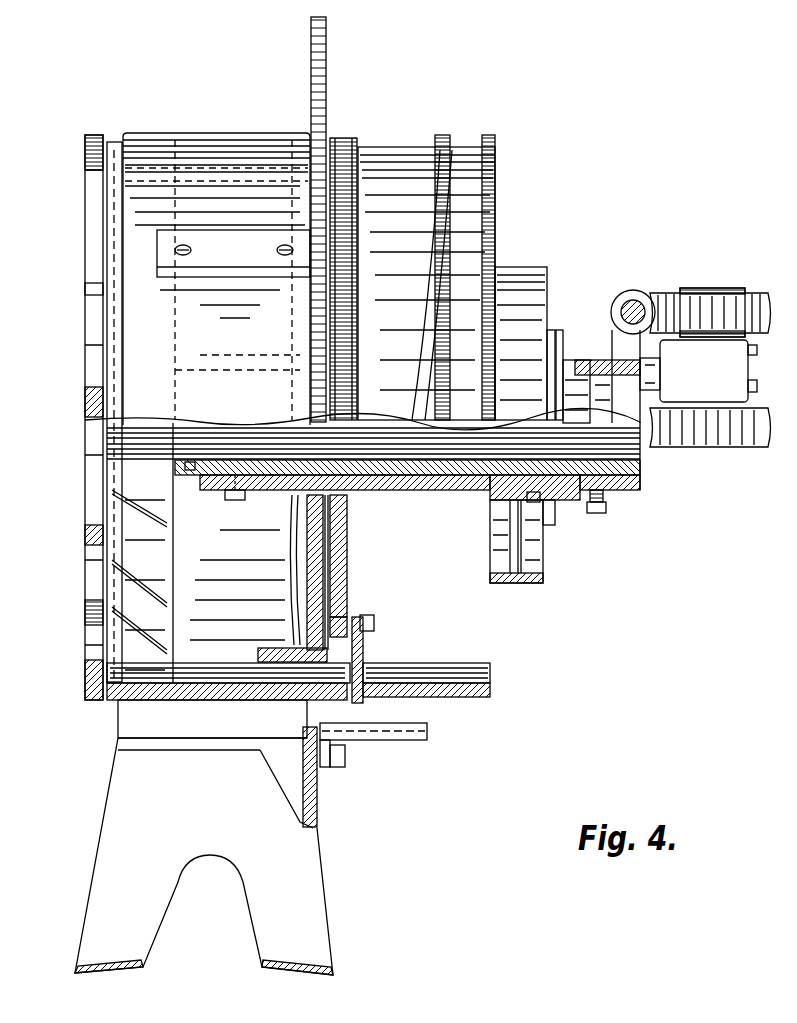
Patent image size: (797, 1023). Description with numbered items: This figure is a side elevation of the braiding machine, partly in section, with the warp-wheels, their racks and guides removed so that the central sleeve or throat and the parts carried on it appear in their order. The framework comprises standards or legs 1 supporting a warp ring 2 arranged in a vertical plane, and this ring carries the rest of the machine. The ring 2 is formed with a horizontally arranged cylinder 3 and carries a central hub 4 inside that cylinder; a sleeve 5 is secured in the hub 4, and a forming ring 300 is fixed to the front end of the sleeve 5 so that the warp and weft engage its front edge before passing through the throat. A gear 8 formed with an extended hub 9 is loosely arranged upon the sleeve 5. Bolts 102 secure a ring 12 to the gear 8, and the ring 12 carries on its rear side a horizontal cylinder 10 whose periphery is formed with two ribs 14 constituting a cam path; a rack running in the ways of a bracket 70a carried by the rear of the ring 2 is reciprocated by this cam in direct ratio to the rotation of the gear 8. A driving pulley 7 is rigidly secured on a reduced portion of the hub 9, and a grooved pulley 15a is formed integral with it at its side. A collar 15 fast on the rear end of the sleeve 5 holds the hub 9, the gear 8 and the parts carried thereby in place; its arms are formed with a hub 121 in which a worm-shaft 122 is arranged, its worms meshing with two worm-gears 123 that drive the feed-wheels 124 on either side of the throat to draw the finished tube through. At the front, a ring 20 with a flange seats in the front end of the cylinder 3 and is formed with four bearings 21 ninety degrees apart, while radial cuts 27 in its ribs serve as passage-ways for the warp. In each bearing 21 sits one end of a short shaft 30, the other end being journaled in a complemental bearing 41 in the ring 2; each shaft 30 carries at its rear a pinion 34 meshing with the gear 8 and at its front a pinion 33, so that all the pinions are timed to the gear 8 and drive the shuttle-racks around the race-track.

The standards or legs 1 is at (310, 900).
The warp ring 2 is at (328, 50).
The cylinder 3 is at (217, 207).
The central hub 4 is at (263, 480).
The sleeve 5 is at (642, 468).
The driving pulley 7 is at (523, 277).
The gear 8 is at (347, 250).
The extended hub 9 is at (563, 503).
The horizontal cylinder 10 is at (470, 700).
The ring 12 is at (470, 665).
The ribs 14 is at (442, 135).
The collar 15 is at (588, 345).
The grooved pulley 15a is at (552, 520).
The ring 20 is at (105, 702).
The bearings 21 is at (118, 740).
The radial cuts 27 is at (83, 285).
The short shaft 30 is at (222, 700).
The pinion 33 is at (83, 147).
The pinion 34 is at (343, 147).
The bearing 41 is at (337, 747).
The bracket 70a is at (330, 700).
The bolts 102 is at (374, 622).
The hub 121 is at (622, 302).
The worm-shaft 122 is at (637, 302).
The worm-gears 123 is at (673, 292).
The feed-wheel 124 is at (733, 437).
The forming ring 300 is at (185, 500).